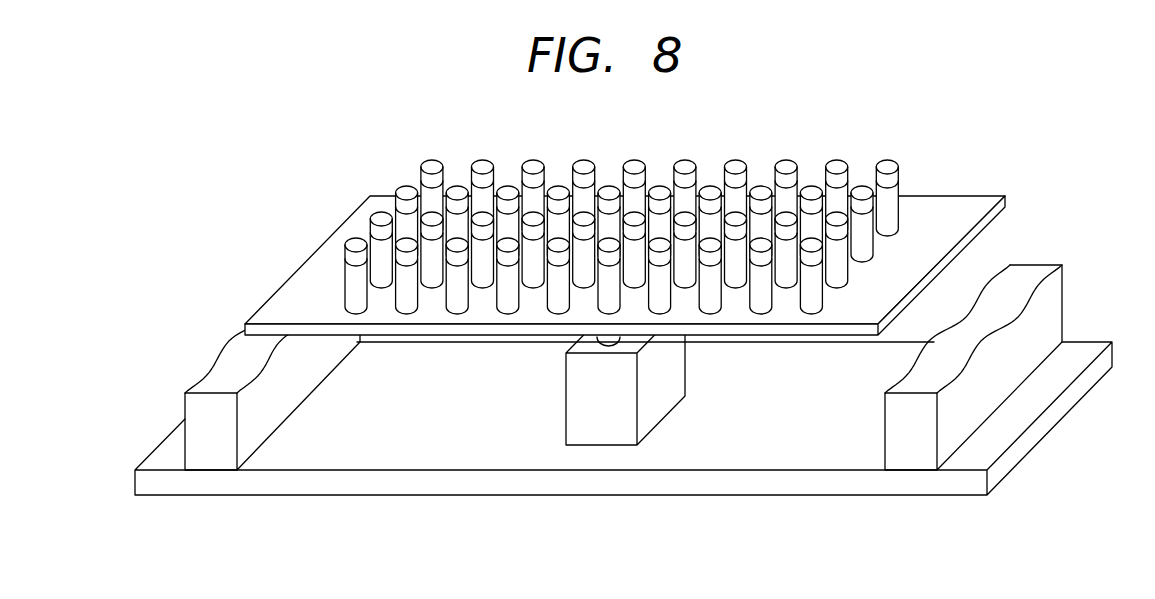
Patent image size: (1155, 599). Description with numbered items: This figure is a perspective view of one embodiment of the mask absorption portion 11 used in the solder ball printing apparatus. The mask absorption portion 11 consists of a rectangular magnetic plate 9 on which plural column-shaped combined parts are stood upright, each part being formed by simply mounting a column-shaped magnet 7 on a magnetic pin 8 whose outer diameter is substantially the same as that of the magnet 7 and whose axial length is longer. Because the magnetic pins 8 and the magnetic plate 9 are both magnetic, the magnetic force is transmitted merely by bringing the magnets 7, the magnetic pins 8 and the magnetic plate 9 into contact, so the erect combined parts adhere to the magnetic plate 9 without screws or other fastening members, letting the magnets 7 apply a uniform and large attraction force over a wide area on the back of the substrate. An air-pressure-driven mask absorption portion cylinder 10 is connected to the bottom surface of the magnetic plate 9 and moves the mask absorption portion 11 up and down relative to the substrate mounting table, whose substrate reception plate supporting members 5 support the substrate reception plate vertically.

The substrate reception plate supporting member 5 is at (972, 403).
The magnet 7 is at (350, 257).
The magnetic pin 8 is at (352, 285).
The magnetic plate 9 is at (293, 306).
The mask absorption portion cylinder 10 is at (606, 415).
The mask absorption portion 11 is at (544, 247).